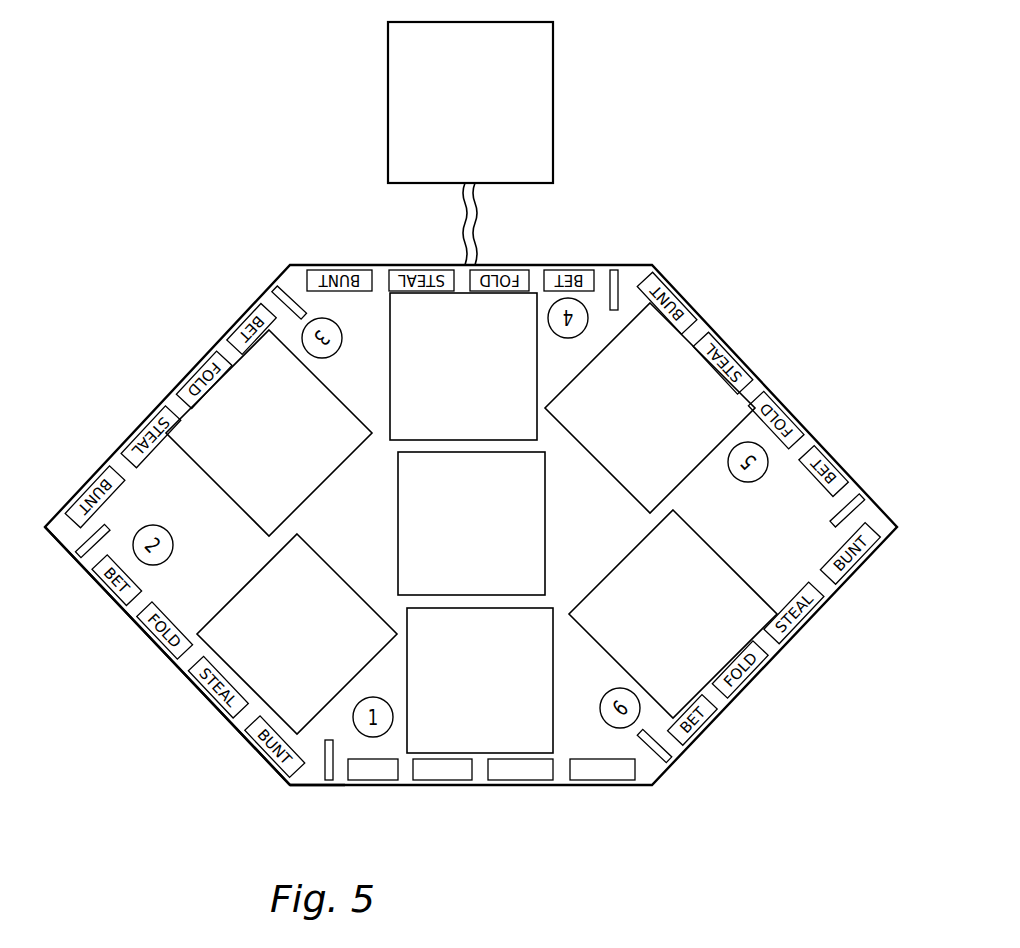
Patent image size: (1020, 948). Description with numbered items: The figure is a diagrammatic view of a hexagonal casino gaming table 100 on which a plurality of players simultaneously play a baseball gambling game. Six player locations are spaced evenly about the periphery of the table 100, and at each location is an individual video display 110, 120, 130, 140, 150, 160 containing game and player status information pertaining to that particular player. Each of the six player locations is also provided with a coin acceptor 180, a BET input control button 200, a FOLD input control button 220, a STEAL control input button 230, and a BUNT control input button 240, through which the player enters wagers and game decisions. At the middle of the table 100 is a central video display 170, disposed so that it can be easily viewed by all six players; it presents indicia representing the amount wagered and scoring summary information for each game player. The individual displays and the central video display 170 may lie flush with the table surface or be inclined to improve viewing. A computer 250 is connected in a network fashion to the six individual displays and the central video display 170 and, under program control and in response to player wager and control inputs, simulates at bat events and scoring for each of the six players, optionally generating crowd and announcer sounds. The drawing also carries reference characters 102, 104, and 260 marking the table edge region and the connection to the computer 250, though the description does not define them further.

The gaming table 100 is at (523, 852).
The table rail edge 102 is at (173, 603).
The table corner edge 104 is at (300, 790).
The video display 110 is at (464, 698).
The video display 120 is at (281, 653).
The video display 130 is at (255, 450).
The video display 140 is at (447, 383).
The video display 150 is at (636, 425).
The video display 160 is at (659, 631).
The central video display 170 is at (455, 541).
The coin acceptor 180 is at (318, 785).
The BET input control button 200 is at (368, 785).
The FOLD input control button 220 is at (437, 780).
The STEAL control input button 230 is at (517, 782).
The BUNT control input button 240 is at (597, 783).
The computer 250 is at (454, 118).
The cable 260 is at (477, 230).